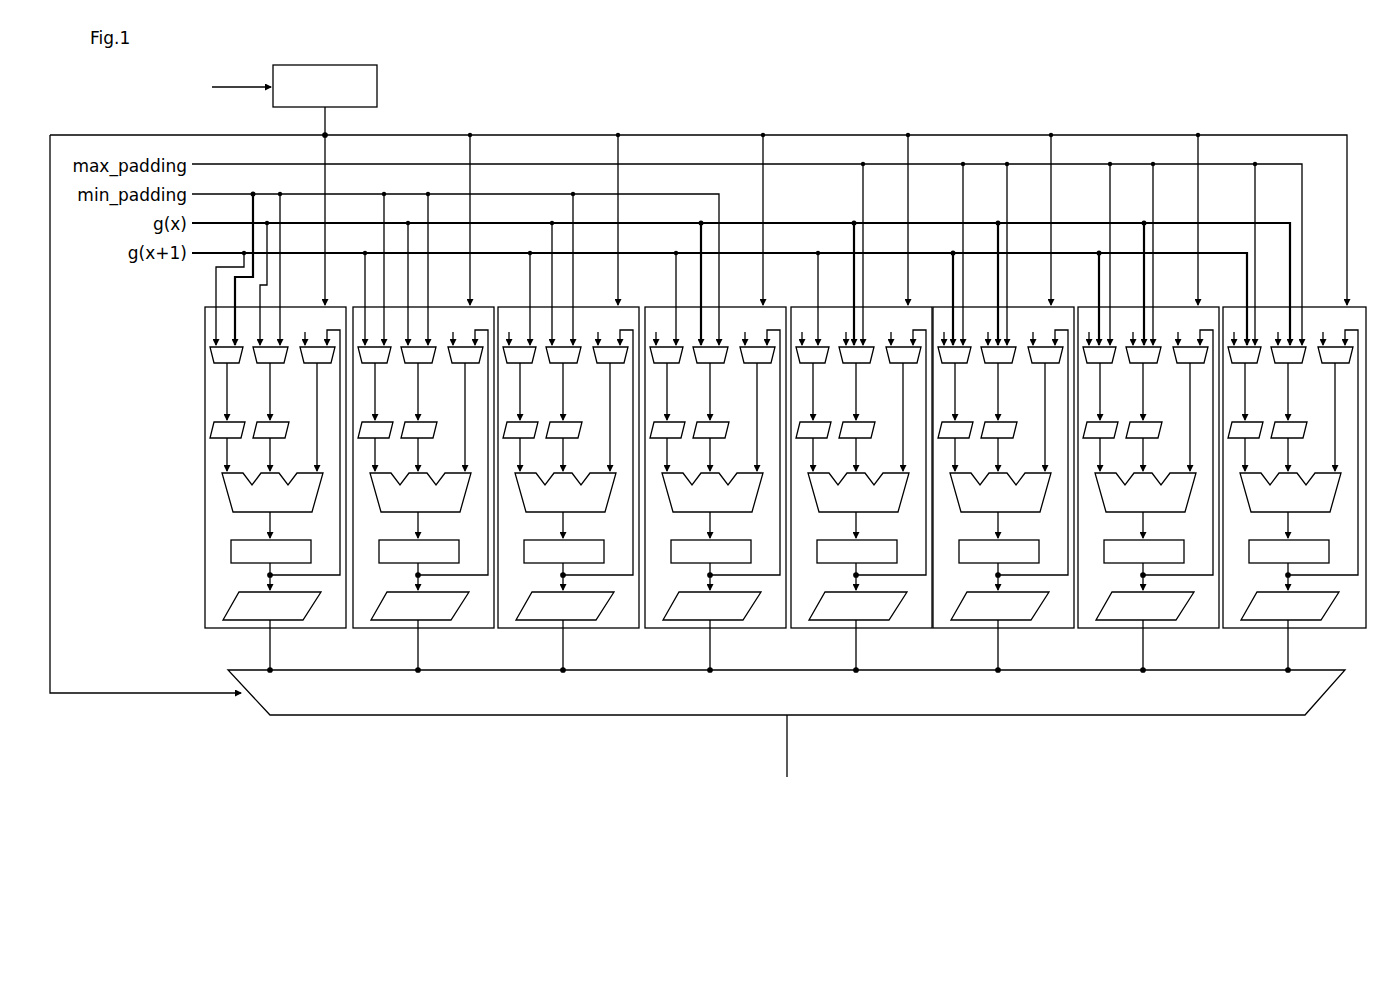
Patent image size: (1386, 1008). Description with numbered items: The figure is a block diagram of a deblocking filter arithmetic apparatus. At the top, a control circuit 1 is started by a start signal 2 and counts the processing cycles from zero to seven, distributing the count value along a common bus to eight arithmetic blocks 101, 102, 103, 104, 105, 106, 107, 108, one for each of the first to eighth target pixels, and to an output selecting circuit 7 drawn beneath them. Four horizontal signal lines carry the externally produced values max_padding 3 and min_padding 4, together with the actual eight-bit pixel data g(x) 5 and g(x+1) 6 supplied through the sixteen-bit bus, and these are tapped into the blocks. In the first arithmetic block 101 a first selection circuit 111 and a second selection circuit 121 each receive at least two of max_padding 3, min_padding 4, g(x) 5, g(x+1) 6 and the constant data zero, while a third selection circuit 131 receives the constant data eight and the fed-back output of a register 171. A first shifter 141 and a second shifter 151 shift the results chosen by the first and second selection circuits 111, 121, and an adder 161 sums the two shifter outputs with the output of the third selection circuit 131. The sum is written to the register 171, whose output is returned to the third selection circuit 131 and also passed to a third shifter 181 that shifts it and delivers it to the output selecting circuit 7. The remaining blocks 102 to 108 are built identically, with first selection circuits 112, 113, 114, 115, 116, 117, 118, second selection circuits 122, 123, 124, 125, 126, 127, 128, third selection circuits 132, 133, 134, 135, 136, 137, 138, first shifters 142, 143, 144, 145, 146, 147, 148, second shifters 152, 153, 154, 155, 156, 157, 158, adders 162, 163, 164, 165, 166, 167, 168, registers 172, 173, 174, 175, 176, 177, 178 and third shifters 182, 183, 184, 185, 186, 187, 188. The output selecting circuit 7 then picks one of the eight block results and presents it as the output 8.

The control circuit 1 is at (377, 82).
The start signal 2 is at (250, 88).
The max_padding 3 is at (234, 164).
The min_padding 4 is at (234, 194).
The g(x) 5 is at (234, 223).
The g(x+1) 6 is at (234, 252).
The output selecting circuit 7 is at (522, 715).
The output 8 is at (790, 743).
The first arithmetic block 101 is at (275, 489).
The second arithmetic block 102 is at (423, 489).
The third arithmetic block 103 is at (568, 489).
The fourth arithmetic block 104 is at (715, 489).
The fifth arithmetic block 105 is at (861, 489).
The sixth arithmetic block 106 is at (1003, 489).
The seventh arithmetic block 107 is at (1148, 489).
The eighth arithmetic block 108 is at (1294, 489).
The first selection circuit 111 is at (237, 383).
The first selection circuit 112 is at (385, 383).
The first selection circuit 113 is at (530, 383).
The first selection circuit 114 is at (677, 383).
The first selection circuit 115 is at (823, 383).
The first selection circuit 116 is at (965, 383).
The first selection circuit 117 is at (1110, 383).
The first selection circuit 118 is at (1255, 383).
The second selection circuit 121 is at (281, 383).
The second selection circuit 122 is at (429, 383).
The second selection circuit 123 is at (574, 383).
The second selection circuit 124 is at (721, 383).
The second selection circuit 125 is at (867, 383).
The second selection circuit 126 is at (1009, 383).
The second selection circuit 127 is at (1154, 383).
The second selection circuit 128 is at (1299, 383).
The third selection circuit 131 is at (306, 409).
The third selection circuit 132 is at (454, 409).
The third selection circuit 133 is at (599, 409).
The third selection circuit 134 is at (746, 409).
The third selection circuit 135 is at (892, 409).
The third selection circuit 136 is at (1034, 409).
The third selection circuit 137 is at (1179, 409).
The third selection circuit 138 is at (1324, 409).
The first shifter 141 is at (237, 446).
The first shifter 142 is at (385, 446).
The first shifter 143 is at (530, 446).
The first shifter 144 is at (677, 446).
The first shifter 145 is at (823, 446).
The first shifter 146 is at (965, 446).
The first shifter 147 is at (1110, 446).
The first shifter 148 is at (1255, 446).
The second shifter 151 is at (281, 446).
The second shifter 152 is at (429, 446).
The second shifter 153 is at (574, 446).
The second shifter 154 is at (721, 446).
The second shifter 155 is at (867, 446).
The second shifter 156 is at (1009, 446).
The second shifter 157 is at (1154, 446).
The second shifter 158 is at (1299, 446).
The adder 161 is at (277, 505).
The adder 162 is at (425, 505).
The adder 163 is at (570, 505).
The adder 164 is at (717, 505).
The adder 165 is at (863, 505).
The adder 166 is at (1005, 505).
The adder 167 is at (1150, 505).
The adder 168 is at (1295, 505).
The register 171 is at (275, 460).
The register 172 is at (423, 460).
The register 173 is at (568, 460).
The register 174 is at (715, 460).
The register 175 is at (861, 460).
The register 176 is at (1003, 460).
The register 177 is at (1148, 460).
The register 178 is at (1293, 460).
The third shifter 181 is at (265, 621).
The third shifter 182 is at (413, 621).
The third shifter 183 is at (558, 621).
The third shifter 184 is at (705, 621).
The third shifter 185 is at (851, 621).
The third shifter 186 is at (993, 621).
The third shifter 187 is at (1138, 621).
The third shifter 188 is at (1283, 621).